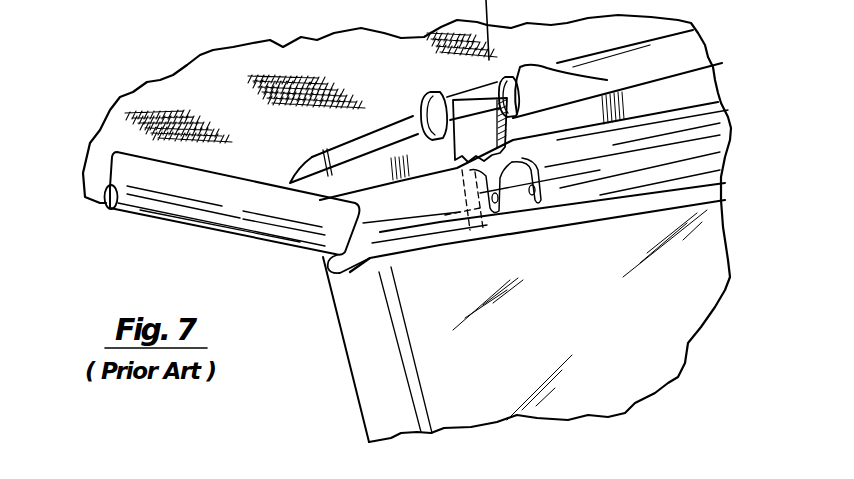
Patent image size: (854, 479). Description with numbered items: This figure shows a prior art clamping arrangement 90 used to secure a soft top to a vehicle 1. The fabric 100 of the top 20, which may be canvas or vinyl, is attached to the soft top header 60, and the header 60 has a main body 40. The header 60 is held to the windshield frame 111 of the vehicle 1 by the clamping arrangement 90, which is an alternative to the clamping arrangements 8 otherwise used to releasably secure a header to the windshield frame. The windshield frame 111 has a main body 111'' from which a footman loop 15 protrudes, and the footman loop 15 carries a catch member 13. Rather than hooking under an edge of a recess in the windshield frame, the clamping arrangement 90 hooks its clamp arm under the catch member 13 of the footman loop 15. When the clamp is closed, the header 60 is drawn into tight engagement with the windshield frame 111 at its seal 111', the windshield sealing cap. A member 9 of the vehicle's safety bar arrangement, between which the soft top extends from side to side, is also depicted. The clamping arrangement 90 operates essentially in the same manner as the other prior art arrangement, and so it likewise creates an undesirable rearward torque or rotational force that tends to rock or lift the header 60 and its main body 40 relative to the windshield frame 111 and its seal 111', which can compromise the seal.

The top 20 is at (157, 80).
The fabric 100 is at (218, 83).
The soft top header 60 is at (404, 113).
The main body 40 is at (678, 55).
The seal 111' is at (672, 104).
The windshield frame 111 is at (681, 150).
The main body 111'' is at (697, 175).
The footman loop 15 is at (542, 158).
The clamping arrangement 90 is at (491, 148).
The catch member 13 is at (455, 165).
The members 9 is at (168, 192).
The clamping arrangements 8 is at (580, 270).
The vehicle 1 is at (300, 352).